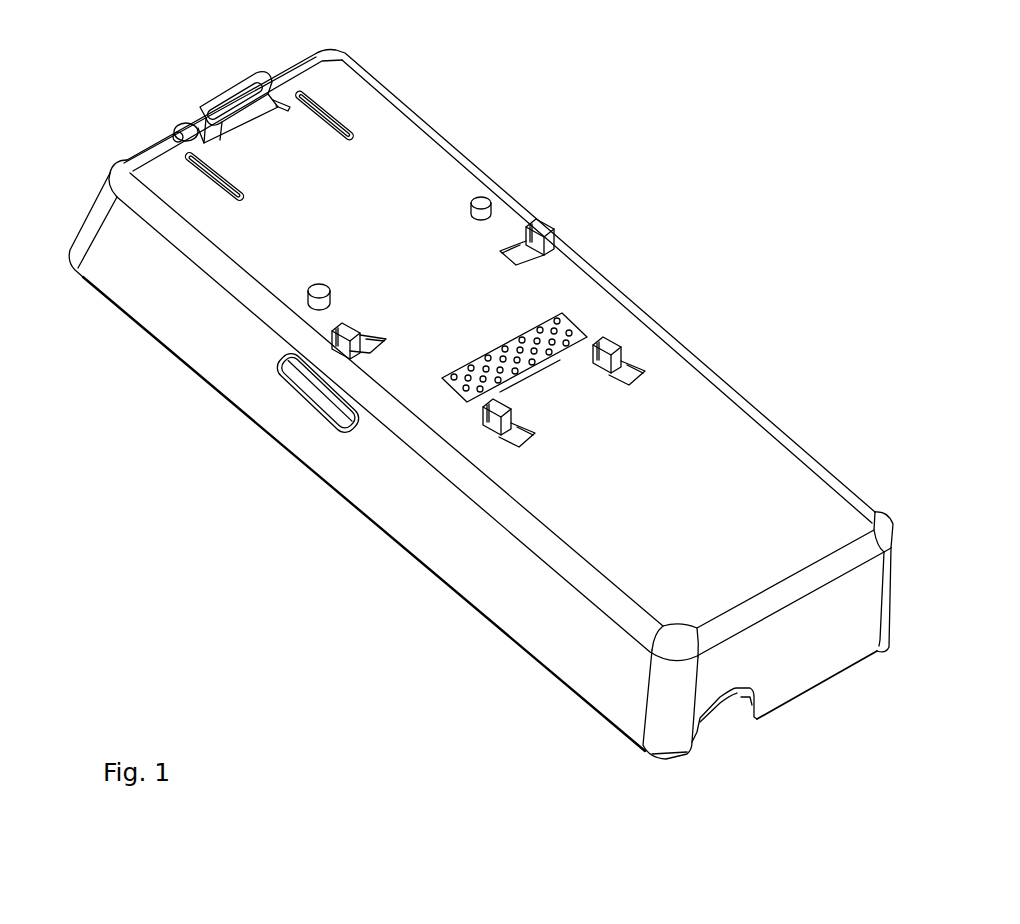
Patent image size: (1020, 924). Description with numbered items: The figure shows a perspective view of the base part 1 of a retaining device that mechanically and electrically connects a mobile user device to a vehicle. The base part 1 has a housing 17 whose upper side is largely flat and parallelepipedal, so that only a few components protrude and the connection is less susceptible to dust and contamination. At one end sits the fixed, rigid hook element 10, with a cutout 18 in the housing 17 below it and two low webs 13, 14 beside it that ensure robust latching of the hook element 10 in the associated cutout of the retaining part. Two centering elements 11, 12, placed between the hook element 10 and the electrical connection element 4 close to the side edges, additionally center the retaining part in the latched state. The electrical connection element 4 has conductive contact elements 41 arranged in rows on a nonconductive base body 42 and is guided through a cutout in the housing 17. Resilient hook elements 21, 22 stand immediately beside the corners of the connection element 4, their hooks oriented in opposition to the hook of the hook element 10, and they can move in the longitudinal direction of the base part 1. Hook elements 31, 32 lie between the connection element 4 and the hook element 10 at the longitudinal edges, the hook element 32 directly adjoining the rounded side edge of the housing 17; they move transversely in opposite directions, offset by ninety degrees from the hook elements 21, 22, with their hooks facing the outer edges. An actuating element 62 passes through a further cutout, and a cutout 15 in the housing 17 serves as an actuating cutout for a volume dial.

The base part 1 is at (440, 128).
The electrical connection element 4 is at (547, 338).
The hook element 10 is at (215, 88).
The centering element 11 is at (495, 200).
The centering element 12 is at (303, 295).
The web 13 is at (343, 113).
The web 14 is at (193, 173).
The cutout 15 is at (745, 700).
The housing 17 is at (585, 680).
The cutout 18 is at (283, 110).
The hook element 21 is at (633, 333).
The hook element 22 is at (477, 415).
The hook element 31 is at (563, 220).
The hook element 32 is at (330, 320).
The contact elements 41 is at (557, 313).
The base body 42 is at (537, 360).
The actuating element 62 is at (311, 410).